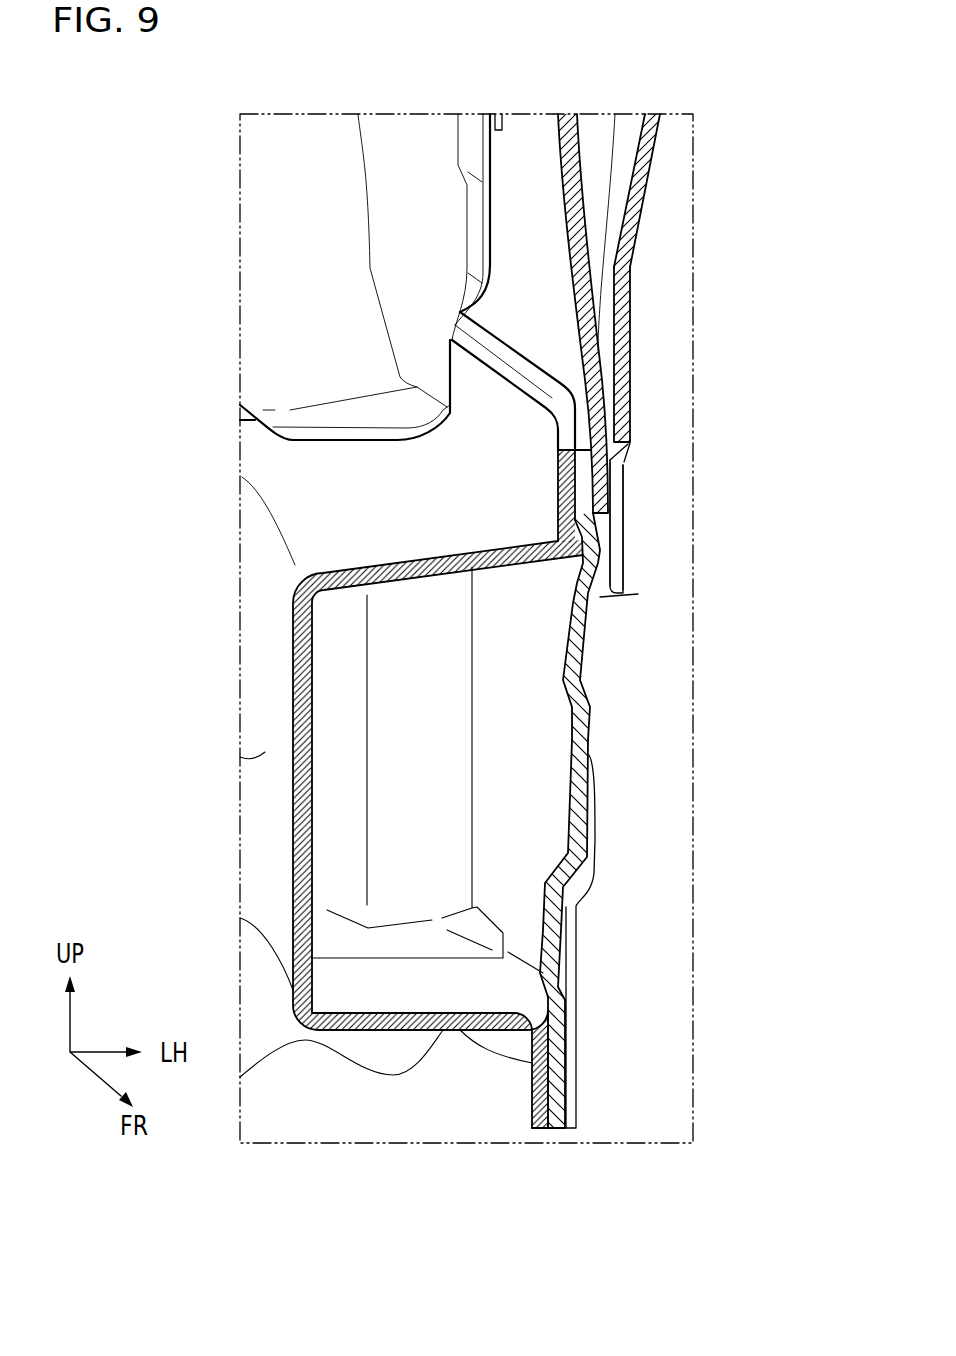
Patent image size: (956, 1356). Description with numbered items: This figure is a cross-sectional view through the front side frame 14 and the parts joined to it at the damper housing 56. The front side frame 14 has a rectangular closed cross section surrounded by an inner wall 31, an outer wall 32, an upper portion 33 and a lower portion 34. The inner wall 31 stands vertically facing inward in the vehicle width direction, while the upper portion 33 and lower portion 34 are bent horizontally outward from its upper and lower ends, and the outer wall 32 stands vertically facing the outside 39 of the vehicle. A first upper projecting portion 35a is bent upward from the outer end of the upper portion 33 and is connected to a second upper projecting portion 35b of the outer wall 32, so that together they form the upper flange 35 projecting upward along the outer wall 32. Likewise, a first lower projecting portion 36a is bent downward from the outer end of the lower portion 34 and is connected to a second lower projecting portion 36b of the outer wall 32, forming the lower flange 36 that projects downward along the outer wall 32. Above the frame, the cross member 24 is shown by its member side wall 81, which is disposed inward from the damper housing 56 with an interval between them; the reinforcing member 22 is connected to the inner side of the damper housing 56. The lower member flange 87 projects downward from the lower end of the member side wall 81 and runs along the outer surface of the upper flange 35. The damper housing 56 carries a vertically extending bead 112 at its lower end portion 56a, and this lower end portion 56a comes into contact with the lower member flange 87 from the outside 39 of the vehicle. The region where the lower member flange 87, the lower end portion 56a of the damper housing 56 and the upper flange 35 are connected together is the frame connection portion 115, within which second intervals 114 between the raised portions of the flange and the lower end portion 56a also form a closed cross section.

The front side frame 14 is at (595, 722).
The reinforcing member 22 is at (267, 223).
The cross member 24 is at (520, 158).
The inner wall 31 is at (248, 757).
The outer wall 32 is at (577, 800).
The upper portion 33 is at (368, 514).
The lower portion 34 is at (392, 994).
The upper flange 35 is at (455, 413).
The first upper projecting portion 35a is at (556, 472).
The second upper projecting portion 35b is at (560, 423).
The lower flange 36 is at (605, 1197).
The first lower projecting portion 36a is at (545, 1100).
The second lower projecting portion 36b is at (570, 1100).
The outside of the vehicle 39 is at (815, 582).
The damper housing 56 is at (655, 147).
The lower end portion of the damper housing 56a is at (605, 530).
The member side wall 81 is at (522, 207).
The lower member flange 87 is at (612, 457).
The bead 112 is at (630, 373).
The second intervals 114 is at (611, 482).
The frame connection portion 115 is at (620, 507).